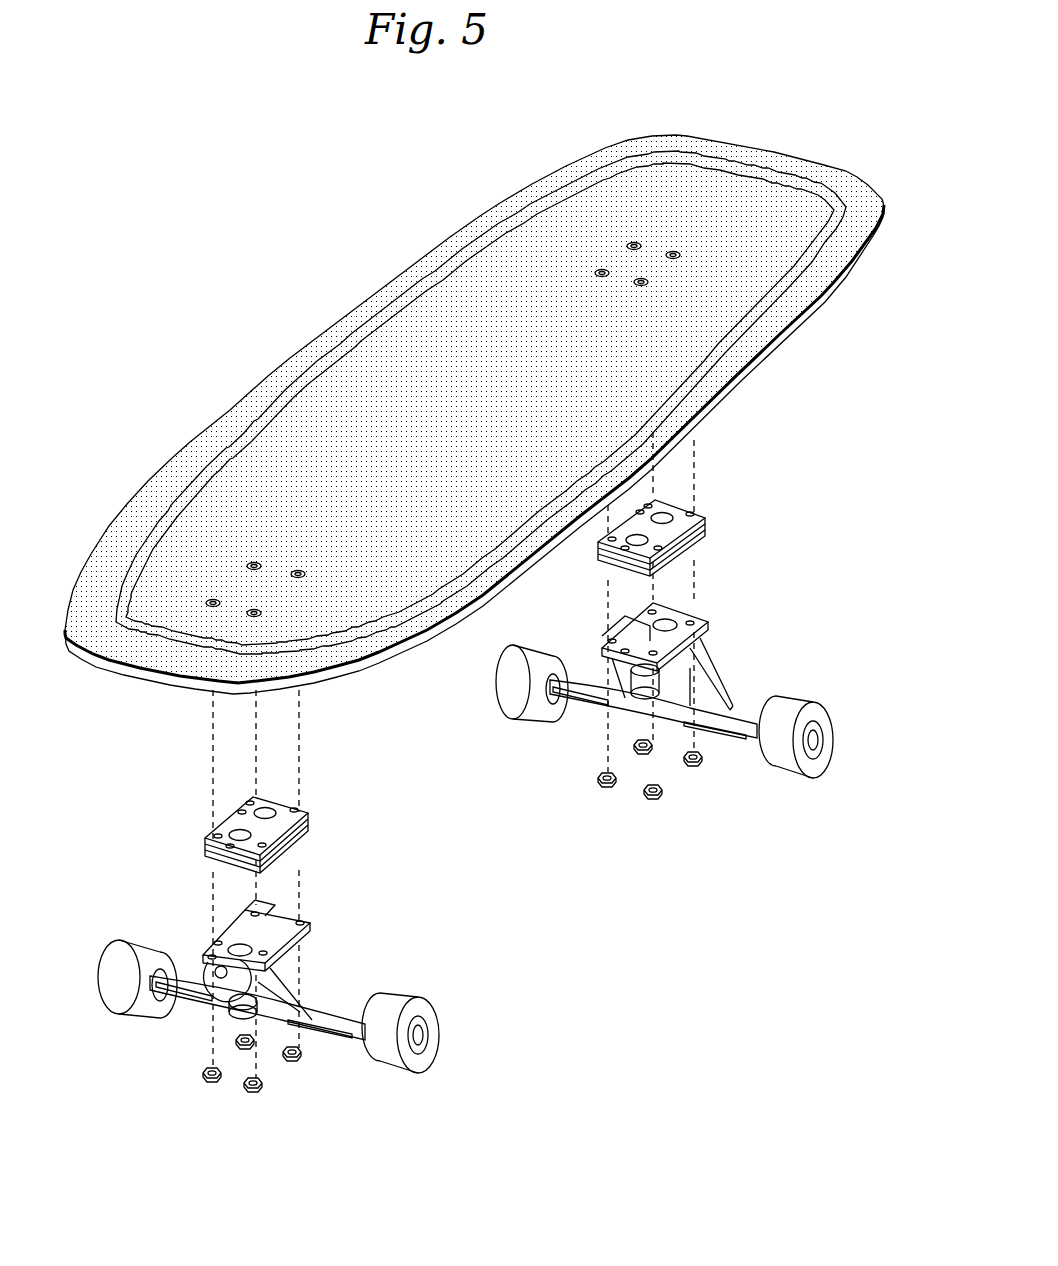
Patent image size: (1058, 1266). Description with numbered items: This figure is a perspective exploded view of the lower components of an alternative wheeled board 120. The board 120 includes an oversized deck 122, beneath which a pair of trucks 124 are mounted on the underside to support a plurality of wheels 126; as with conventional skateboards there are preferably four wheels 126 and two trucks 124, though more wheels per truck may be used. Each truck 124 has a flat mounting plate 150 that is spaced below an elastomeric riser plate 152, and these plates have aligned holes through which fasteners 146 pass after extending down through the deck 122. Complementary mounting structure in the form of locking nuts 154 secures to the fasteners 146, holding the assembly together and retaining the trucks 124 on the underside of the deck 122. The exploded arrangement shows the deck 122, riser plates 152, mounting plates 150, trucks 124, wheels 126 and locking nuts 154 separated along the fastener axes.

The wheeled board 120 is at (262, 250).
The deck 122 is at (433, 322).
The fasteners 146 is at (602, 270).
The elastomeric riser plate 152 is at (704, 516).
The flat mounting plate 150 is at (704, 622).
The trucks 124 is at (585, 724).
The wheels 126 is at (815, 778).
The locking nuts 154 is at (603, 784).